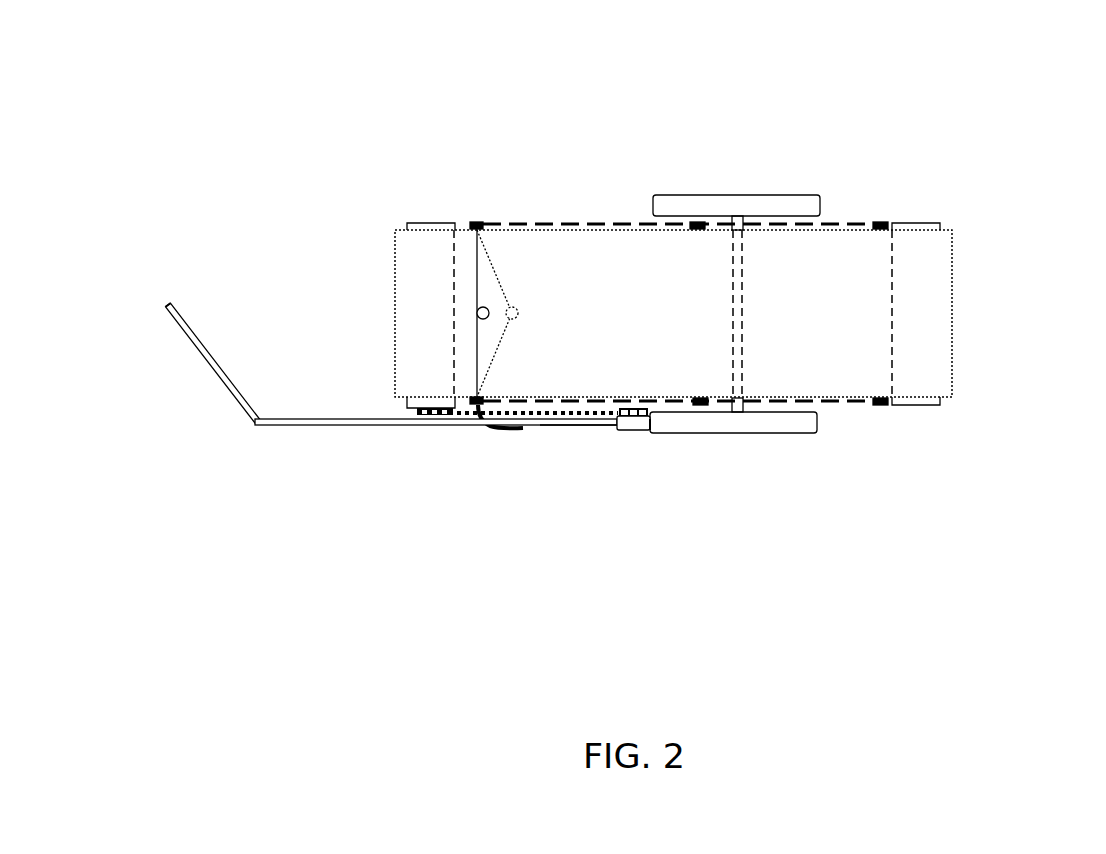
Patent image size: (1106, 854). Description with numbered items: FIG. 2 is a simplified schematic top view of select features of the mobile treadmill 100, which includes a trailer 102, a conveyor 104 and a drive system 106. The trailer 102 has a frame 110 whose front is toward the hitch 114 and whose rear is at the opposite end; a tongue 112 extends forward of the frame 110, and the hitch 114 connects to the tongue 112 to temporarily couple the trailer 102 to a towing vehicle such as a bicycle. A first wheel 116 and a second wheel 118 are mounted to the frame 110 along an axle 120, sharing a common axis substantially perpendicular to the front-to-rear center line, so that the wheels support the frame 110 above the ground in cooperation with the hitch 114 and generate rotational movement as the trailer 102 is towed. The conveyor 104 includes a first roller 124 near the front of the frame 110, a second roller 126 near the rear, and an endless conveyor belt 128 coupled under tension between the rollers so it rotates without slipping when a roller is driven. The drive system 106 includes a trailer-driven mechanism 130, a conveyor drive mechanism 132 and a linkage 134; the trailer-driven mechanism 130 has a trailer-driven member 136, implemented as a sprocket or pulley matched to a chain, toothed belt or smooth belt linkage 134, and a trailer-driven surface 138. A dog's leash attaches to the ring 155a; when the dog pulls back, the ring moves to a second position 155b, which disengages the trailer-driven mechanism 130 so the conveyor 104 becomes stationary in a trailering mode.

The mobile treadmill 100 is at (1035, 118).
The trailer 102 is at (152, 472).
The conveyor 104 is at (988, 289).
The drive system 106 is at (393, 562).
The frame 110 is at (555, 224).
The tongue 112 is at (187, 342).
The hitch 114 is at (168, 306).
The first wheel 116 is at (798, 433).
The second wheel 118 is at (790, 195).
The axle 120 is at (730, 223).
The first roller 124 is at (420, 223).
The second roller 126 is at (943, 405).
The conveyor belt 128 is at (857, 404).
The trailer-driven mechanism 130 is at (630, 431).
The conveyor drive mechanism 132 is at (372, 426).
The linkage 134 is at (573, 426).
The trailer-driven member 136 is at (628, 409).
The trailer-driven surface 138 is at (652, 423).
The ring 155a is at (479, 309).
The second position 155b is at (512, 306).